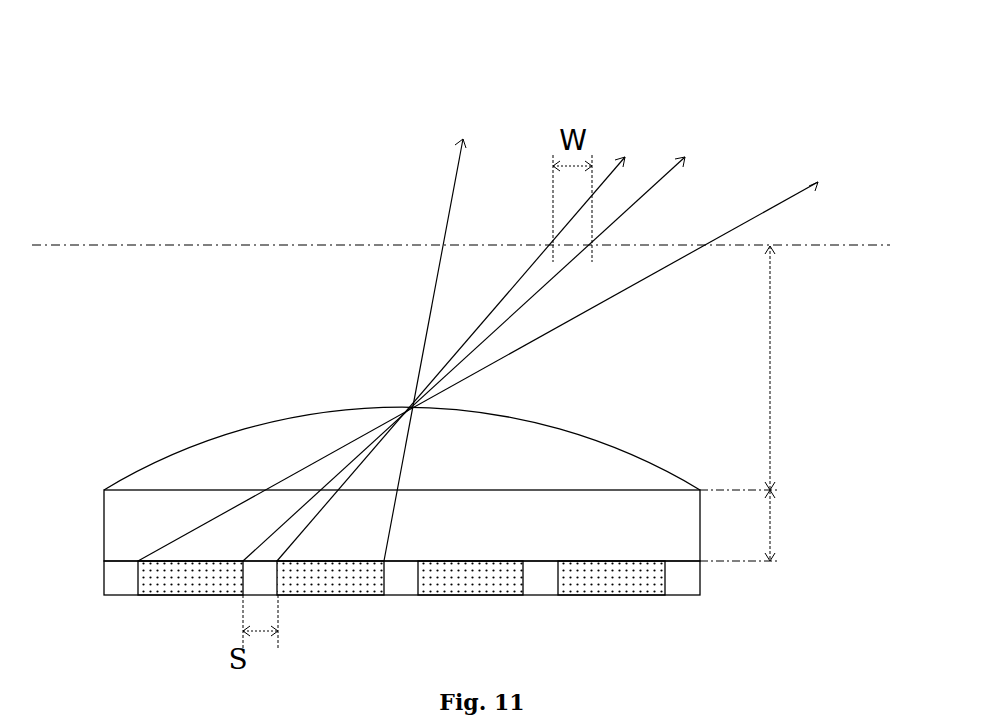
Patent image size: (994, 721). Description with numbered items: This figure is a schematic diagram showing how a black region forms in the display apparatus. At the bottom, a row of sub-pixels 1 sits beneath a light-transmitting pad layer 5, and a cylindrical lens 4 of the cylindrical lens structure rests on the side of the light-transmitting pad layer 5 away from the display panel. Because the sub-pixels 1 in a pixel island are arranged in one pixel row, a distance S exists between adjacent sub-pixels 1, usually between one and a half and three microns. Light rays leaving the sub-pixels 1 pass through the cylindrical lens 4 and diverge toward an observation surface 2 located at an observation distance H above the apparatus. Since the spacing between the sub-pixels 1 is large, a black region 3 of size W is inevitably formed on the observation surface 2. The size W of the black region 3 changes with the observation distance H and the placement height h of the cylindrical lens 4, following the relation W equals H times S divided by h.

The sub-pixel 1 is at (328, 582).
The observation surface 2 is at (853, 246).
The black region 3 is at (623, 190).
The cylindrical lens 4 is at (609, 462).
The light-transmitting pad layer 5 is at (665, 517).